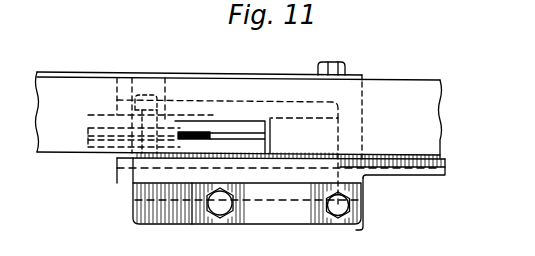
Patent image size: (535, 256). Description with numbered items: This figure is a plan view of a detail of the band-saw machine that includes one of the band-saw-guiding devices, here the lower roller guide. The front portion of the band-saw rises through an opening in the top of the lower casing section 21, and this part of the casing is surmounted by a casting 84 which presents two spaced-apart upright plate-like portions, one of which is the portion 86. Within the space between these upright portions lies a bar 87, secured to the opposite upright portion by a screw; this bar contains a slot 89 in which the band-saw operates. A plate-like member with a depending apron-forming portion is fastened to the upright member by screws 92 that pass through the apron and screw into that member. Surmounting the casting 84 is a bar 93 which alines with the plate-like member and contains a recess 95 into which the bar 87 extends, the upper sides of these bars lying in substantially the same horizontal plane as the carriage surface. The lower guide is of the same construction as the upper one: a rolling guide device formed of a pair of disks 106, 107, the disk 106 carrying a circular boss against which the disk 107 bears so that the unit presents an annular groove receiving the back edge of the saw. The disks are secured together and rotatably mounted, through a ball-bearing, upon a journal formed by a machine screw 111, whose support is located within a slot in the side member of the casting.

The lower casing section 21 is at (364, 197).
The casting 84 is at (258, 224).
The upright plate-like portion 86 is at (305, 177).
The bar 87 is at (217, 120).
The slot 89 is at (235, 135).
The screws 92 is at (327, 63).
The bar 93 is at (421, 133).
The recess 95 is at (230, 122).
The disk 106 is at (108, 143).
The disk 107 is at (90, 148).
The machine screw 111 is at (152, 136).